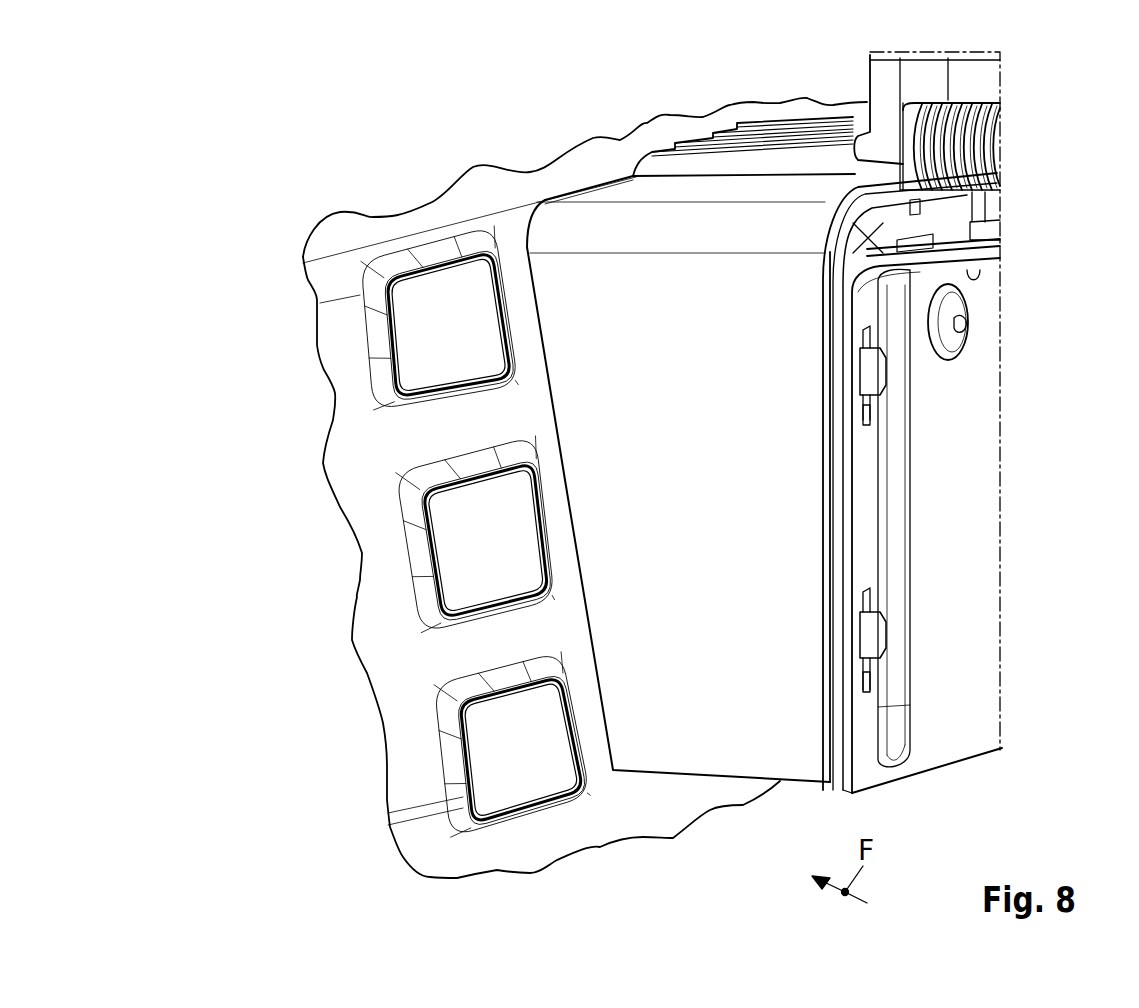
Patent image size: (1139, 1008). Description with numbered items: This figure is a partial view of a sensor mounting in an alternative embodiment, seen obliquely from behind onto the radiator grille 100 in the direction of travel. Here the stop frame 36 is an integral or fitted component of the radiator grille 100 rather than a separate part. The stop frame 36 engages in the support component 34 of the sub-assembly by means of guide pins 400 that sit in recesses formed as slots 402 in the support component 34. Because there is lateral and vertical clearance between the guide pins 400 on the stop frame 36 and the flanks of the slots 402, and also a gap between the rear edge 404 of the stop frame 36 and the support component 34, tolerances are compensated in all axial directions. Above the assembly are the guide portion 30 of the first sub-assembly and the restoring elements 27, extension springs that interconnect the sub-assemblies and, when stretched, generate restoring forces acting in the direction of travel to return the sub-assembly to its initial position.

The radiator grille 100 is at (340, 278).
The stop frame 36 is at (688, 473).
The guide portion 30 is at (883, 72).
The restoring elements 27 is at (978, 140).
The rear edge 404 is at (867, 208).
The guide pins 400 is at (870, 375).
The slots 402 is at (865, 412).
The support component 34 is at (865, 493).